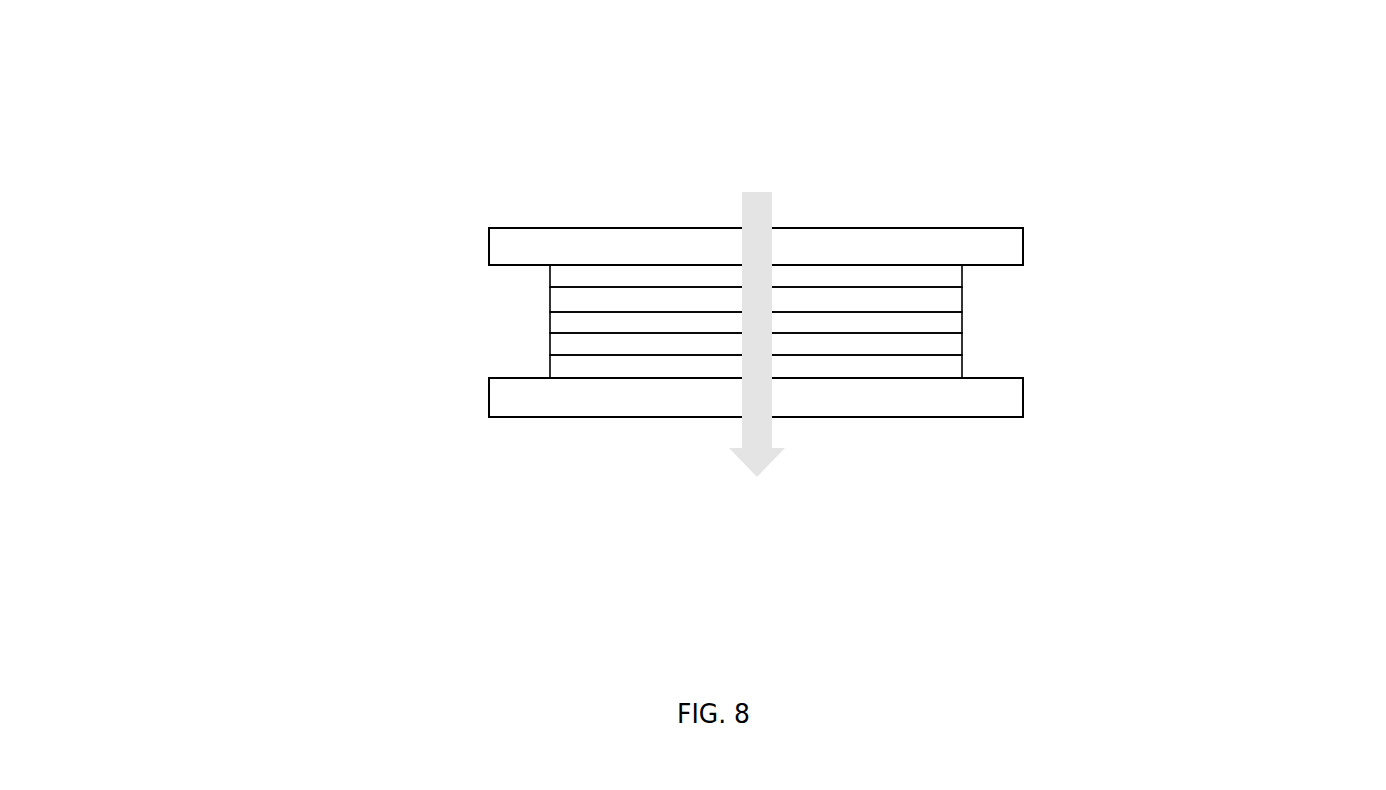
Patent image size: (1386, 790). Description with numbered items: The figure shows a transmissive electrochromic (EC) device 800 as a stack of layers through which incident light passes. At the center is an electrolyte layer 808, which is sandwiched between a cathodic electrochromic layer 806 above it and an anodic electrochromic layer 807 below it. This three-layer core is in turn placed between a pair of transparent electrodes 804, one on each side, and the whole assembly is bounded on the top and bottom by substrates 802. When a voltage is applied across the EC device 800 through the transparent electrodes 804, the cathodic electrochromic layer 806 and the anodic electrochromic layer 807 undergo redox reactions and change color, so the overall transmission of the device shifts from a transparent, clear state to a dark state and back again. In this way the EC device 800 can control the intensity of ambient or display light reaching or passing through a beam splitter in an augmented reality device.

The transmissive electrochromic (EC) device 800 is at (1118, 46).
The substrate 802 is at (1023, 245).
The transparent electrode 804 is at (962, 276).
The cathodic electrochromic layer 806 is at (550, 296).
The anodic electrochromic layer 807 is at (550, 346).
The electrolyte layer 808 is at (962, 323).